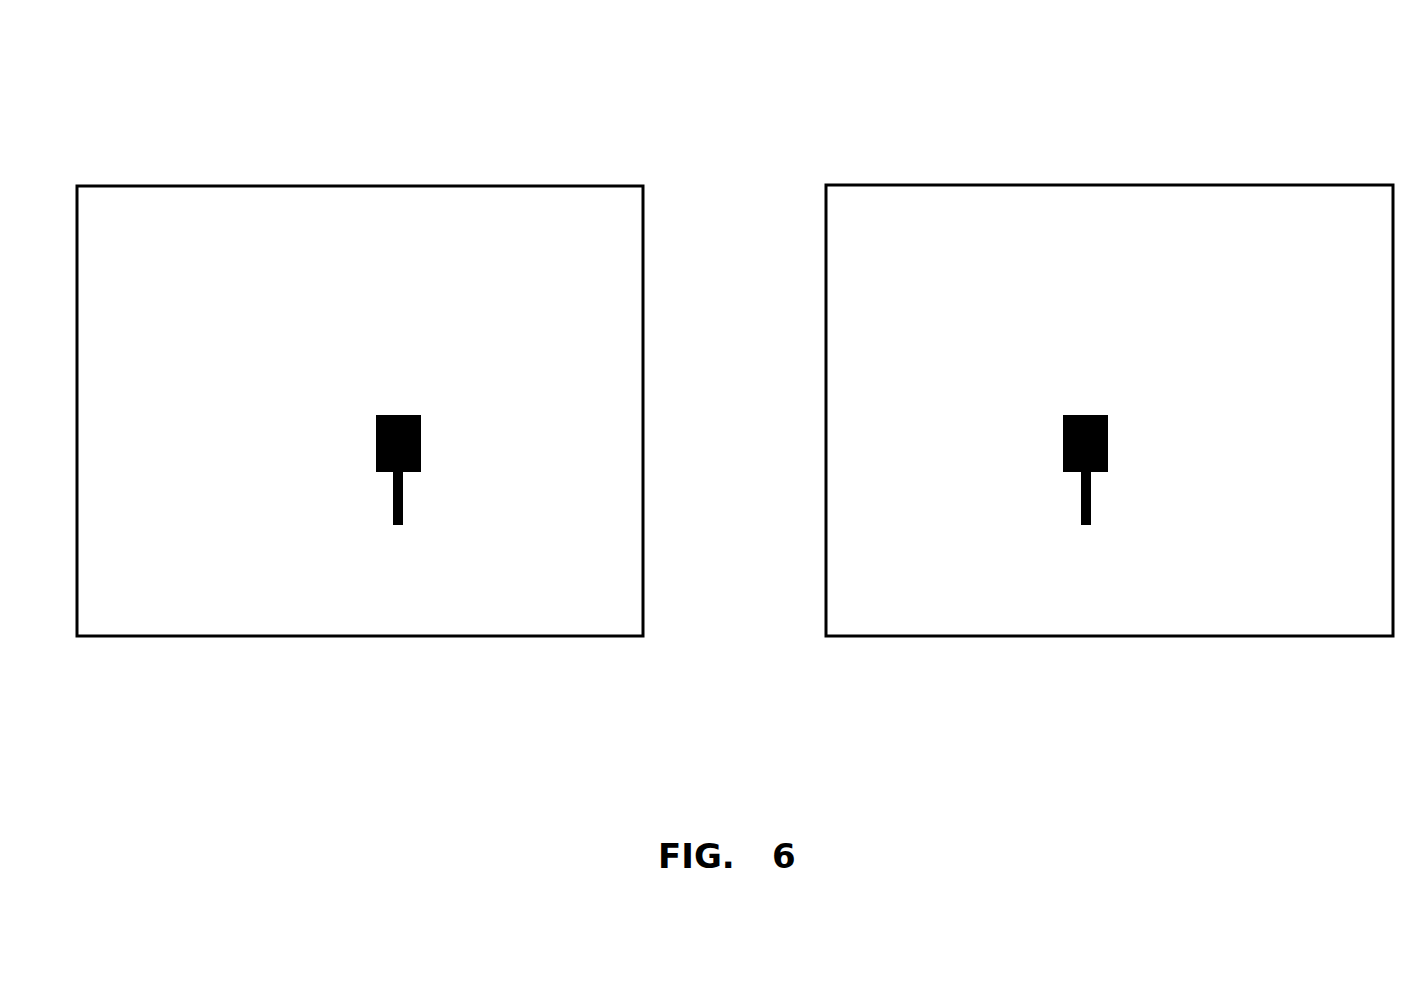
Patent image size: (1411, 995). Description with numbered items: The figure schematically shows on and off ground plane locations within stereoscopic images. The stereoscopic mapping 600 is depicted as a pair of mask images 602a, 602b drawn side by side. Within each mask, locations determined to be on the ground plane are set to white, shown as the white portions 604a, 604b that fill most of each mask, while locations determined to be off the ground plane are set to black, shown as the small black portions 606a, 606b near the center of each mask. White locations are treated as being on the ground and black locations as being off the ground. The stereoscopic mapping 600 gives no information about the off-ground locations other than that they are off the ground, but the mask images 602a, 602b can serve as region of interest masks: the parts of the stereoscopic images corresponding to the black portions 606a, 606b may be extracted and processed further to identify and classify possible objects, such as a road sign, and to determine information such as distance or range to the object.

The stereoscopic mapping 600 is at (692, 48).
The mask image 602a is at (320, 186).
The mask image 602b is at (973, 185).
The white portion 604a is at (460, 274).
The white portion 604b is at (987, 274).
The black portion 606a is at (398, 415).
The black portion 606b is at (1087, 415).